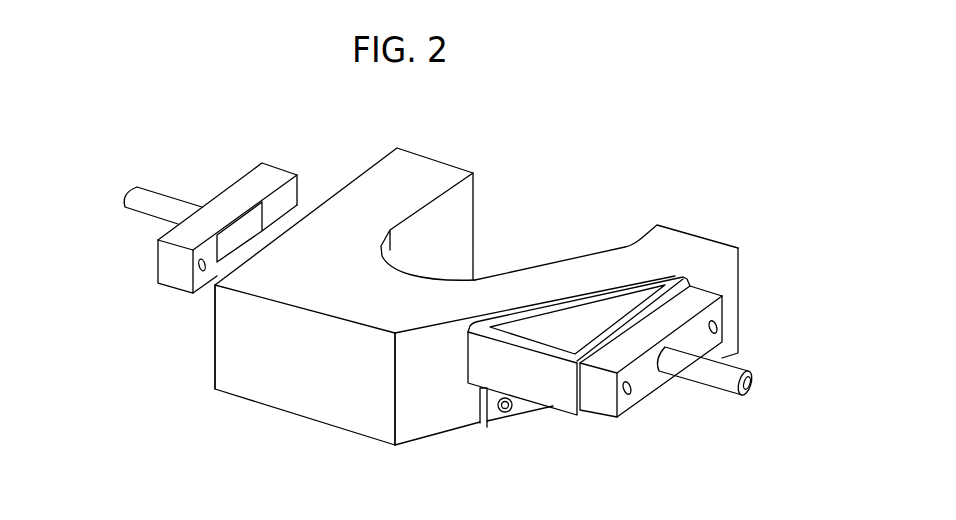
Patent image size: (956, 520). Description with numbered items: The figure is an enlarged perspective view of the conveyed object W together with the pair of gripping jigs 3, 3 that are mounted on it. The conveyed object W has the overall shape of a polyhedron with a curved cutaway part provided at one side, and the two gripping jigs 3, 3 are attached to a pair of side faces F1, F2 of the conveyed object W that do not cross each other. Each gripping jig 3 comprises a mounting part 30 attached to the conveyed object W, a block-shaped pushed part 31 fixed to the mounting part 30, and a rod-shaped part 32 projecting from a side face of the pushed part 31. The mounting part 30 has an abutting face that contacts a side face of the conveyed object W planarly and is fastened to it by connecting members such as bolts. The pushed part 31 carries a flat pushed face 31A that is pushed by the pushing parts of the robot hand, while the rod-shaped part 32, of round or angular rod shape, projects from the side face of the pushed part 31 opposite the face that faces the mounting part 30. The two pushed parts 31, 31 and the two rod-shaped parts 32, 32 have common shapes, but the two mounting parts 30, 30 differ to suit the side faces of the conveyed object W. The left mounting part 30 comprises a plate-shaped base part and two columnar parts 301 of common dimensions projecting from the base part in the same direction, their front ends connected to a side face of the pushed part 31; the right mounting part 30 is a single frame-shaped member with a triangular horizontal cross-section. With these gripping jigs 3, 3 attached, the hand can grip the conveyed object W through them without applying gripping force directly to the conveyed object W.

The gripping jig 3 is at (196, 175).
The mounting part 30 is at (214, 282).
The pushed part 31 is at (160, 287).
The pushed face 31A is at (248, 232).
The columnar part 301 is at (245, 240).
The rod-shaped part 32 is at (143, 208).
The conveyed object W is at (337, 401).
The side face F1 is at (210, 365).
The side face F2 is at (437, 408).